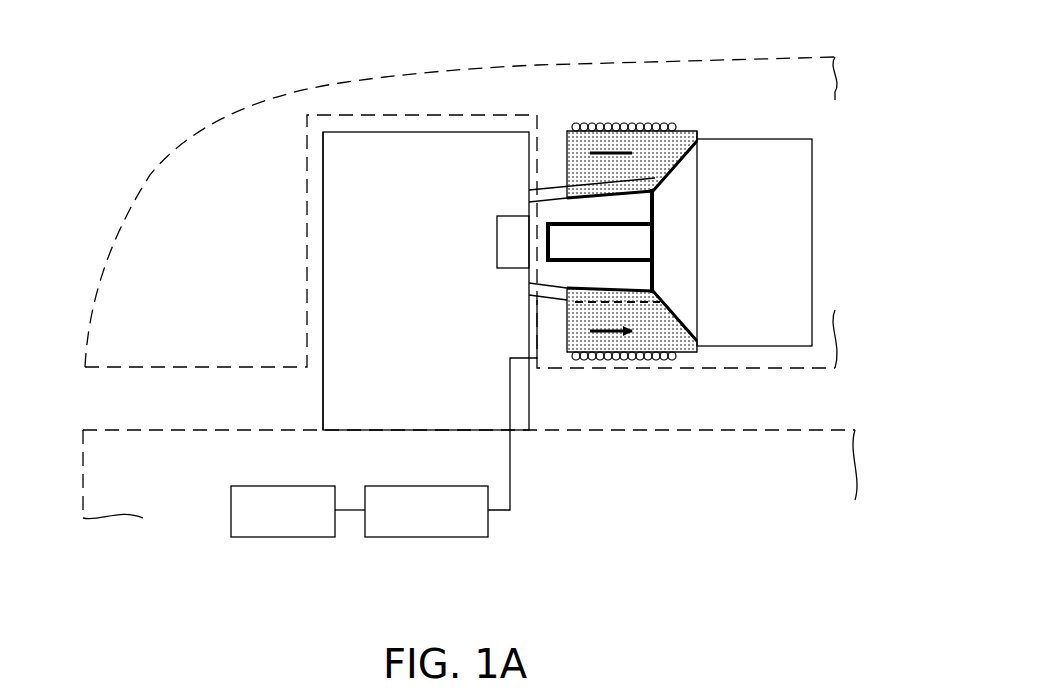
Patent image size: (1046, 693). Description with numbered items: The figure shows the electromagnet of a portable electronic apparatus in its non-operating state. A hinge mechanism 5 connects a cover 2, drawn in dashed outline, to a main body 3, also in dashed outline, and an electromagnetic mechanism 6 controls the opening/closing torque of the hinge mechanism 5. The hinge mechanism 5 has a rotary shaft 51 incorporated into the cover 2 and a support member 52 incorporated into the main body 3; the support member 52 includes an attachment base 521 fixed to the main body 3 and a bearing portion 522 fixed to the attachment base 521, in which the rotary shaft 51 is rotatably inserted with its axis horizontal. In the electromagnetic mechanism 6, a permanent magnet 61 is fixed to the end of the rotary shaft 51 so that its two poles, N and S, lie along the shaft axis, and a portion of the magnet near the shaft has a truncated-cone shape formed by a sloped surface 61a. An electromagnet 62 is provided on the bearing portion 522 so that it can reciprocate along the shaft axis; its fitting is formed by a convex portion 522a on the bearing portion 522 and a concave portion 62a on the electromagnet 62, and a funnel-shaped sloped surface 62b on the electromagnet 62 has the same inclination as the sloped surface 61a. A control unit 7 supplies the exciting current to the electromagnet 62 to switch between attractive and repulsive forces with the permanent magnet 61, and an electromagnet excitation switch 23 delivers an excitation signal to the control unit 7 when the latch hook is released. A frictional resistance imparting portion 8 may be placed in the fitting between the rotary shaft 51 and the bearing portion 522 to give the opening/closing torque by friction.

The cover 2 is at (244, 100).
The main body 3 is at (78, 440).
The hinge mechanism 5 is at (626, 288).
The electromagnetic mechanism 6 is at (683, 181).
The control unit 7 is at (474, 538).
The frictional resistance imparting portion 8 is at (558, 217).
The electromagnet excitation switch 23 is at (289, 538).
The rotary shaft 51 is at (630, 263).
The support member 52 is at (402, 433).
The attachment base 521 is at (323, 402).
The bearing portion 522 is at (605, 272).
The convex portion 522a is at (556, 300).
The permanent magnet 61 is at (762, 139).
The sloped surface 61a is at (684, 128).
The electromagnet 62 is at (583, 125).
The concave portion 62a is at (648, 190).
The funnel-shaped sloped surface 62b is at (675, 173).